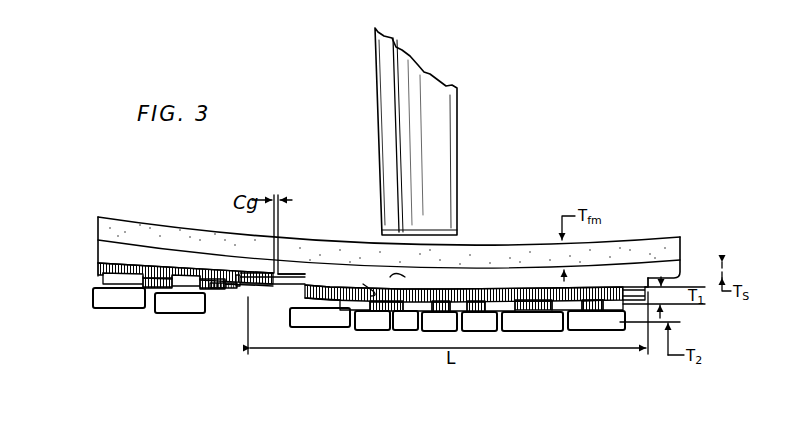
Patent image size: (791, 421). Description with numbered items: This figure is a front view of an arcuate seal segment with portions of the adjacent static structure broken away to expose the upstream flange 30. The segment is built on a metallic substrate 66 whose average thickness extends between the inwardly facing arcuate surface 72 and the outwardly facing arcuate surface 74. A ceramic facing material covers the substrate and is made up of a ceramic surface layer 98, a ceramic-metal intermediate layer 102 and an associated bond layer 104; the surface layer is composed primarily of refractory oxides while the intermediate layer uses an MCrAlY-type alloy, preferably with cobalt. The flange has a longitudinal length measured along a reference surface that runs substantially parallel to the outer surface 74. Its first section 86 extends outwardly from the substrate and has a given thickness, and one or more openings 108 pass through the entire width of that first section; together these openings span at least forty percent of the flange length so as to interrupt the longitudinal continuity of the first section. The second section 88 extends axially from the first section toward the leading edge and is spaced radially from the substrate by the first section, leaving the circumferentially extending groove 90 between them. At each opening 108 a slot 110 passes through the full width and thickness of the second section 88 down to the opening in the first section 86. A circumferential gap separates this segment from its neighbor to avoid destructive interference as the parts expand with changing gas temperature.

The upstream flange 30 is at (271, 326).
The metallic substrate 66 is at (542, 289).
The inwardly facing arcuate surface 72 is at (408, 282).
The outwardly facing arcuate surface 74 is at (359, 284).
The first section 86 is at (303, 298).
The second section 88 is at (285, 324).
The circumferentially extending groove 90 is at (150, 282).
The ceramic surface layer 98 is at (680, 237).
The ceramic-metal intermediate layer 102 is at (680, 247).
The bond layer 104 is at (648, 278).
The openings 108 is at (286, 285).
The slot 110 is at (458, 332).